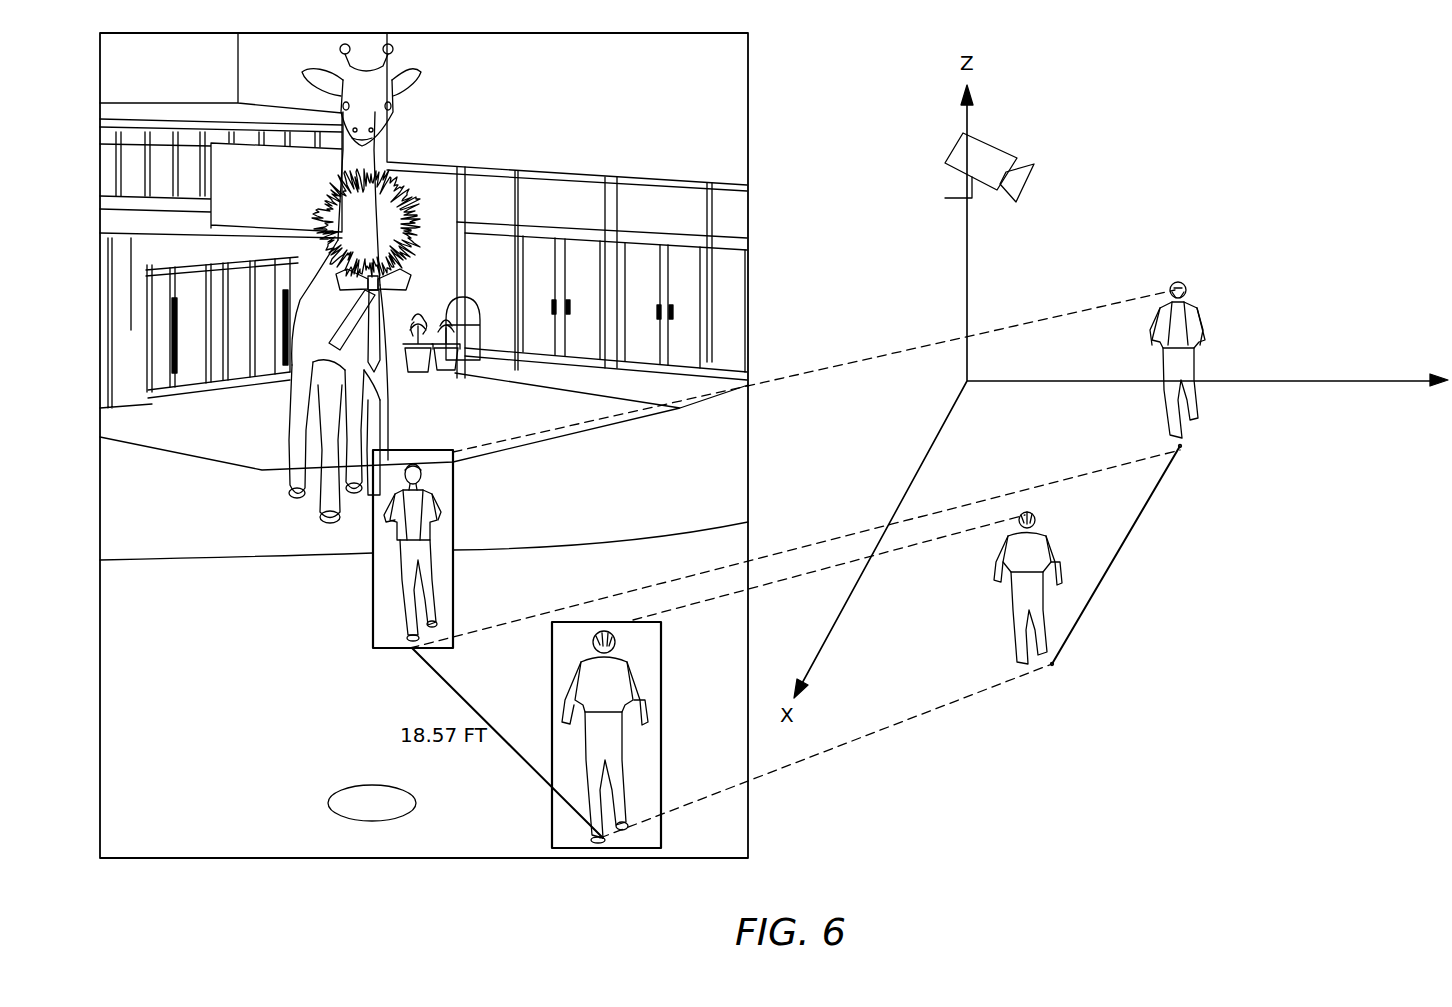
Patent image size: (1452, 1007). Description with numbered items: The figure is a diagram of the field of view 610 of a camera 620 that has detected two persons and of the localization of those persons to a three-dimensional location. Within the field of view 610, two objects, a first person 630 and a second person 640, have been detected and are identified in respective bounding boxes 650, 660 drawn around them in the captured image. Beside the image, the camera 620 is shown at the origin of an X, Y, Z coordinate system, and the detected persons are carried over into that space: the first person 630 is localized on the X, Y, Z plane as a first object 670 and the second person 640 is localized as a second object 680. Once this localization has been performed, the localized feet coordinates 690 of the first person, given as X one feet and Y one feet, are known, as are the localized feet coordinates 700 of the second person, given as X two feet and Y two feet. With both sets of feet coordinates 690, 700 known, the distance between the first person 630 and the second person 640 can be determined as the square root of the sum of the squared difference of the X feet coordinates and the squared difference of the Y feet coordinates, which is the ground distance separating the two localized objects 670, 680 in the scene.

The field of view 610 is at (748, 103).
The camera 620 is at (990, 143).
The first person 630 is at (552, 670).
The second person 640 is at (455, 501).
The bounding box 650 is at (552, 816).
The bounding box 660 is at (372, 582).
The first object 670 is at (1015, 617).
The second object 680 is at (1203, 333).
The localized feet coordinates of first person 690 is at (1052, 667).
The localized feet coordinates of second person 700 is at (1180, 446).